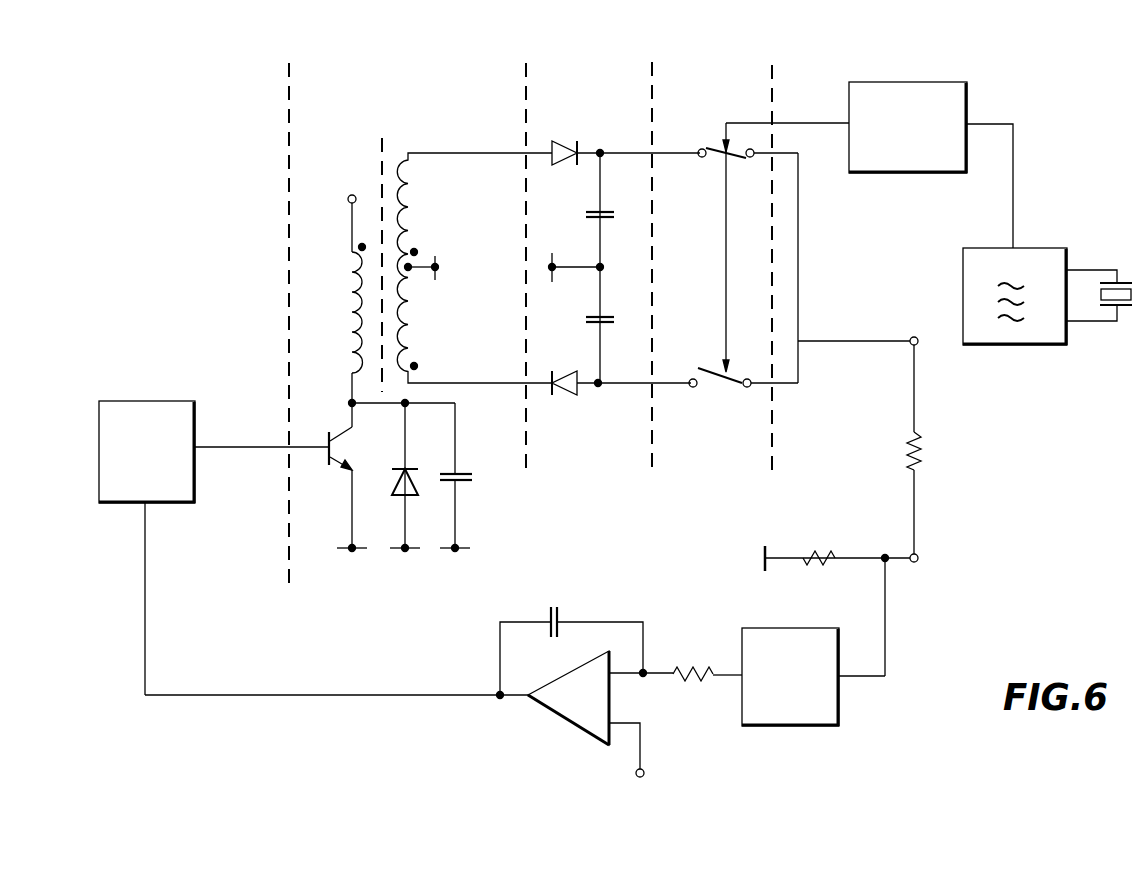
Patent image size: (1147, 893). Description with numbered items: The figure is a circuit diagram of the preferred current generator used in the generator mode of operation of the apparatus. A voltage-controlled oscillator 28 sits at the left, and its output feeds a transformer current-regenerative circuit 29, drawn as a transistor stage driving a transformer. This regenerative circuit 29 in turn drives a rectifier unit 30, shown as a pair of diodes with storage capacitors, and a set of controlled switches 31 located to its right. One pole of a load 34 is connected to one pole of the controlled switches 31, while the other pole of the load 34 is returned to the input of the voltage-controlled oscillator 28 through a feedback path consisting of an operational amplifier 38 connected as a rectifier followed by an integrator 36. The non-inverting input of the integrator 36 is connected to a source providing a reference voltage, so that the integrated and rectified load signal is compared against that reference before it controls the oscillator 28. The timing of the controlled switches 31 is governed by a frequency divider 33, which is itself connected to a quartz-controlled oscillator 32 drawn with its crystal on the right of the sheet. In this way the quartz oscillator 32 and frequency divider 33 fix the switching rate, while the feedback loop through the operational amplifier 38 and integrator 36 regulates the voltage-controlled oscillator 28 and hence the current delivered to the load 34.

The voltage-controlled oscillator 28 is at (222, 395).
The transformer current-regenerative circuit 29 is at (478, 127).
The rectifier unit 30 is at (588, 102).
The controlled switches 31 is at (718, 102).
The quartz-controlled oscillator 32 is at (960, 362).
The frequency divider 33 is at (945, 140).
The load 34 is at (921, 463).
The integrator 36 is at (550, 726).
The operational amplifier 38 is at (740, 745).